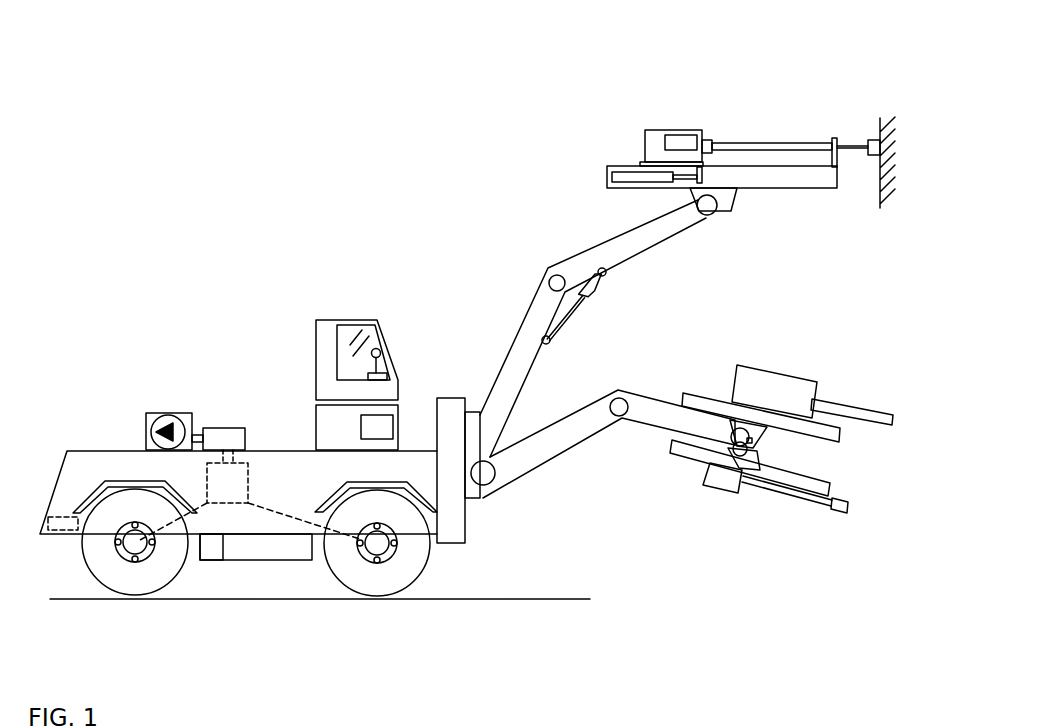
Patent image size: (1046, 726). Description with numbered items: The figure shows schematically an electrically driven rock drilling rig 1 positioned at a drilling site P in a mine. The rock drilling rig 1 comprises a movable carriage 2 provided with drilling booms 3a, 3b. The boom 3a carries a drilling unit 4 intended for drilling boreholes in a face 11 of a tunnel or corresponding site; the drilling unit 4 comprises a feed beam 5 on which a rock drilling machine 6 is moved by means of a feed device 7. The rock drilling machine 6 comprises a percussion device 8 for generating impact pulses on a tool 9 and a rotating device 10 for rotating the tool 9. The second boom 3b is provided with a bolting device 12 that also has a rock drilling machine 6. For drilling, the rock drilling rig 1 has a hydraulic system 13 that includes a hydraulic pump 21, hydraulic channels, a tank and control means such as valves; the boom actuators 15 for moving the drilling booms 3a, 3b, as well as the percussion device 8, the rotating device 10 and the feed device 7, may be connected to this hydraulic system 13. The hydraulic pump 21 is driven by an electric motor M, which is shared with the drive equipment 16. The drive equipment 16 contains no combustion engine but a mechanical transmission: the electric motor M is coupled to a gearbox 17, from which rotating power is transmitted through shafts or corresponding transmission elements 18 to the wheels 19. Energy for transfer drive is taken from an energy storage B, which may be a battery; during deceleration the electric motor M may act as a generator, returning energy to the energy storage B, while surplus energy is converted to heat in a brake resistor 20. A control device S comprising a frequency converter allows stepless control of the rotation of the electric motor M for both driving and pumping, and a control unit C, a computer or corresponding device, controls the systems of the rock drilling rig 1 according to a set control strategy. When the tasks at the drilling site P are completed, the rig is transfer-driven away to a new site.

The rock drilling rig 1 is at (355, 218).
The movable carriage 2 is at (238, 296).
The drilling boom 3a is at (533, 330).
The boom 3b is at (558, 438).
The drilling unit 4 is at (763, 60).
The feed beam 5 is at (773, 188).
The rock drilling machine 6 is at (674, 108).
The feed device 7 is at (632, 178).
The percussion device 8 is at (650, 143).
The tool 9 is at (793, 145).
The rotating device 10 is at (687, 140).
The face 11 is at (598, 78).
The bolting device 12 is at (710, 360).
The hydraulic system 13 is at (143, 398).
The boom actuators 15 is at (583, 306).
The drive equipment 16 is at (267, 403).
The gearbox 17 is at (232, 475).
The transmission elements 18 is at (172, 528).
The wheels 19 is at (408, 570).
The brake resistor 20 is at (65, 528).
The hydraulic pump 21 is at (153, 425).
The electric motor M is at (227, 435).
The control unit C is at (383, 425).
The energy storage B is at (265, 548).
The control device S is at (213, 553).
The drilling site P is at (454, 279).